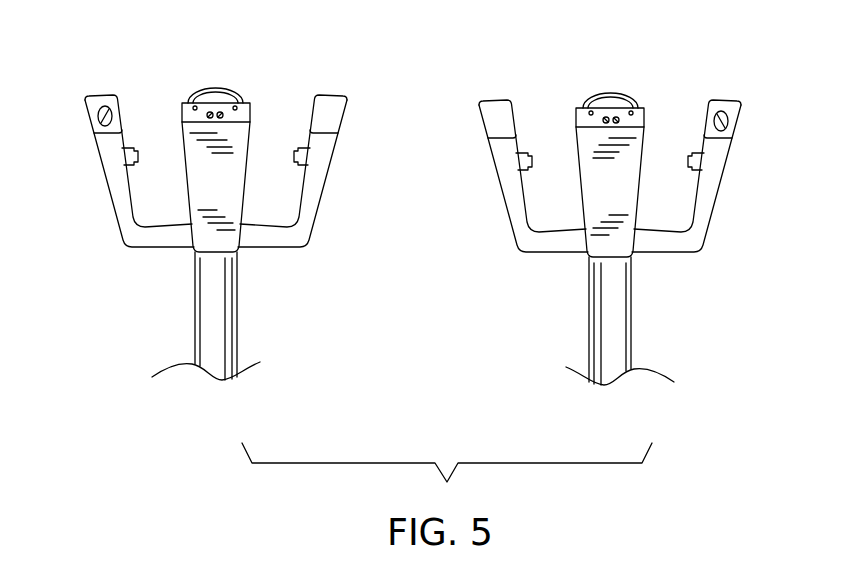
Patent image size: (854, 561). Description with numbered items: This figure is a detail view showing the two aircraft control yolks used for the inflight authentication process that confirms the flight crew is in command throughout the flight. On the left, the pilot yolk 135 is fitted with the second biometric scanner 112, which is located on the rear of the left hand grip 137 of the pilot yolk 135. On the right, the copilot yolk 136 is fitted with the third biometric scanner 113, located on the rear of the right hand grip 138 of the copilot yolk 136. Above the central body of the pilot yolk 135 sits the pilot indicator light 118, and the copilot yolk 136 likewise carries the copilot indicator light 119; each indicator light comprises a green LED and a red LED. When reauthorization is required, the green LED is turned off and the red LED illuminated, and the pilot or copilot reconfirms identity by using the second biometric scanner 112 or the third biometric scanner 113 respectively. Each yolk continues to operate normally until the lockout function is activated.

The second biometric scanner 112 is at (147, 112).
The third biometric scanner 113 is at (723, 122).
The pilot indicator light 118 is at (213, 92).
The copilot indicator light 119 is at (613, 100).
The pilot yolk 135 is at (222, 316).
The copilot yolk 136 is at (618, 322).
The left hand grip 137 is at (99, 164).
The right hand grip 138 is at (722, 195).